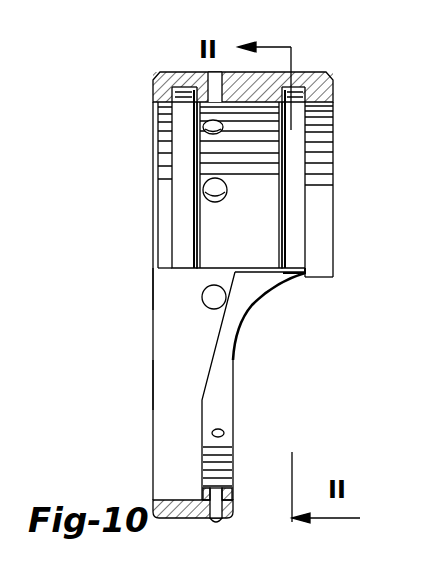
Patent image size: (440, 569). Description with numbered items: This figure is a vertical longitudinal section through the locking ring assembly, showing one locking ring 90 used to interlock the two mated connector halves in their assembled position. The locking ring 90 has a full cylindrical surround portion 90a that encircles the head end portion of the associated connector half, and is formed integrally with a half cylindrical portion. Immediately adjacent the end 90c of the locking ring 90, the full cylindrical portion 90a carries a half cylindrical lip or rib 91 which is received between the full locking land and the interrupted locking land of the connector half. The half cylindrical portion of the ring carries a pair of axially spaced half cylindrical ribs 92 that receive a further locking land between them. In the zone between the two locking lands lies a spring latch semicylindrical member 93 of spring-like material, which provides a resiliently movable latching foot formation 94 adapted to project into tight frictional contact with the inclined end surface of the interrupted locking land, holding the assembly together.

The locking ring 90 is at (327, 68).
The full cylindrical surround portion 90a is at (160, 383).
The end of the locking ring 90c is at (153, 289).
The half cylindrical lip or rib 91 is at (162, 200).
The half cylindrical ribs 92 is at (267, 212).
The spring latch semicylindrical member 93 is at (230, 393).
The latching foot formation 94 is at (297, 280).